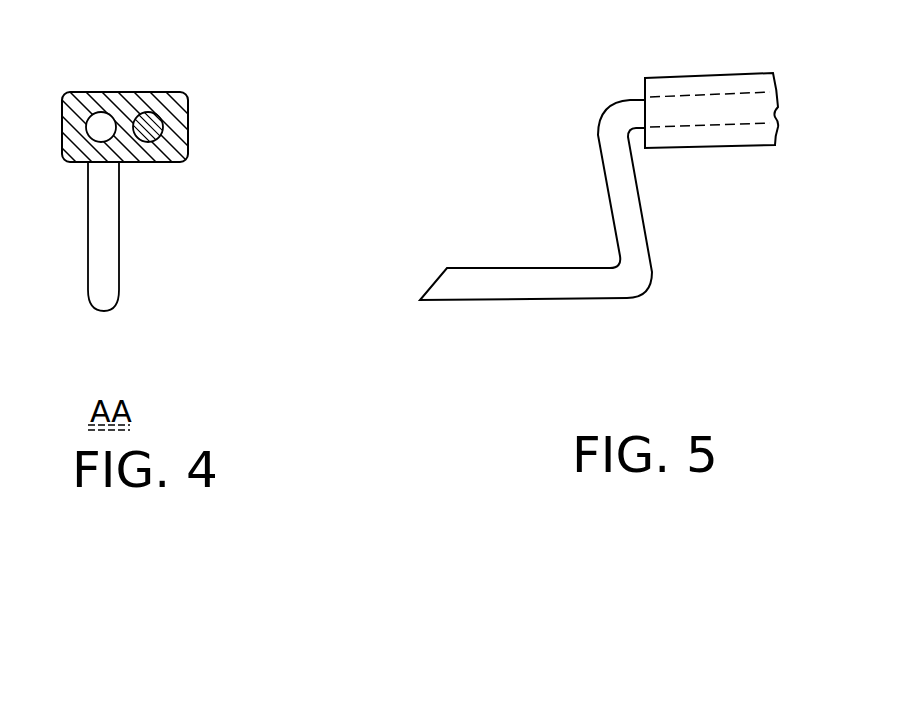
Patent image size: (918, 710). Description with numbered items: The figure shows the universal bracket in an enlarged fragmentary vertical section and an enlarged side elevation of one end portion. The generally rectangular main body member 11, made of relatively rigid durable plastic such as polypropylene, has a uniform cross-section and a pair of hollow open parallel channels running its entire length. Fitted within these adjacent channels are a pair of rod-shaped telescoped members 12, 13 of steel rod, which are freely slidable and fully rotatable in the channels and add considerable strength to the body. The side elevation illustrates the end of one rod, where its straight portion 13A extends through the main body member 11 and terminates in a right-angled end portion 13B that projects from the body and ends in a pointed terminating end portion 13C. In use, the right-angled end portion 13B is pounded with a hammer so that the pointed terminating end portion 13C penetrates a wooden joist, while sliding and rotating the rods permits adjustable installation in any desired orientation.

In FIG. 4, the main body member 11 is at (188, 133).
In FIG. 5, the main body member 11 is at (685, 76).
In FIG. 4, the rod-shaped telescoped member 12 is at (140, 95).
In FIG. 4, the rod-shaped telescoped member 13 is at (105, 93).
In FIG. 5, the straight portion 13A is at (763, 113).
In FIG. 4, the right-angled end portion 13B is at (119, 245).
In FIG. 5, the right-angled end portion 13B is at (650, 278).
In FIG. 5, the pointed terminating end portion 13C is at (430, 288).